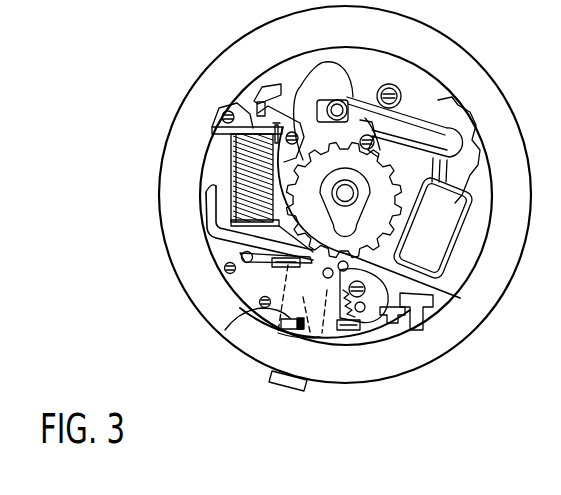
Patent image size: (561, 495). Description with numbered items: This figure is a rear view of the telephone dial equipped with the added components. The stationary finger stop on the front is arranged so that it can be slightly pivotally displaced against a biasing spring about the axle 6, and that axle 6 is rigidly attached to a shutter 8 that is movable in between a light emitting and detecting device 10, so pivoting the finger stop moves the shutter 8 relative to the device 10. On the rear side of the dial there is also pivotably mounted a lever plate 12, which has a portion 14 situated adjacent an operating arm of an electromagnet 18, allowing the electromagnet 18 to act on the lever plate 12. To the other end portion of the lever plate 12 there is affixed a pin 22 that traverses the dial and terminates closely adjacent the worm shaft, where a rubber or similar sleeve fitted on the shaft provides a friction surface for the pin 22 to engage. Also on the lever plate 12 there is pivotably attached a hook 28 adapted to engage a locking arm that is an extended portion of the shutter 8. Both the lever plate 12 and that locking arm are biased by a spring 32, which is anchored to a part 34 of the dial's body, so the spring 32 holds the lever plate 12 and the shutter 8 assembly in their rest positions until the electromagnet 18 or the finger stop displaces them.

The axle 6 is at (233, 326).
The shutter 8 is at (260, 340).
The light emitting and detecting device 10 is at (318, 342).
The lever plate 12 is at (215, 240).
The portion 14 is at (206, 189).
The electromagnet 18 is at (233, 163).
The pin 22 is at (445, 285).
The hook 28 is at (280, 268).
The spring 32 is at (340, 343).
The part of the dial's body 34 is at (392, 317).